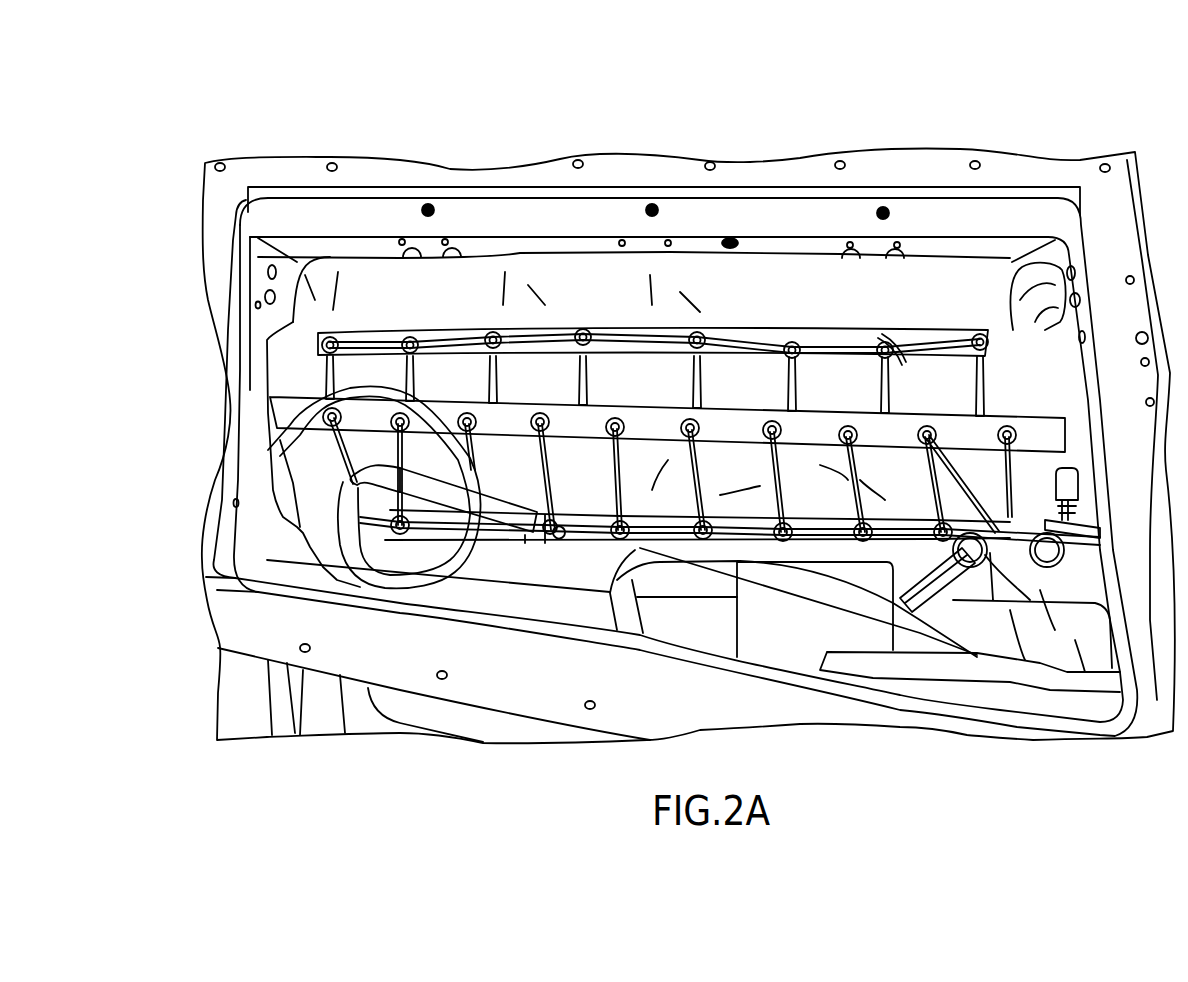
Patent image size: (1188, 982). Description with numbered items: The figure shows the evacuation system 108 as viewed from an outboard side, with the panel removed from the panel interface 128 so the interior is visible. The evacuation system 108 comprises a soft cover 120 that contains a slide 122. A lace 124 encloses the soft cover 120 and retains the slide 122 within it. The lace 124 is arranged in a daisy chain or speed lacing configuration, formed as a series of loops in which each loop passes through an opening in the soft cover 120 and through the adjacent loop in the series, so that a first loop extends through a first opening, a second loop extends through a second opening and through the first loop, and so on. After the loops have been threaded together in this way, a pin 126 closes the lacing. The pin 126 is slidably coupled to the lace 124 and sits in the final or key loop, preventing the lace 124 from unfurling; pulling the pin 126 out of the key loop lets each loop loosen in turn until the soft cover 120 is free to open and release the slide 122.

The evacuation system 108 is at (250, 115).
The soft cover 120 is at (537, 283).
The slide 122 is at (883, 463).
The lace 124 is at (610, 343).
The pin 126 is at (893, 346).
The panel interface 128 is at (347, 215).